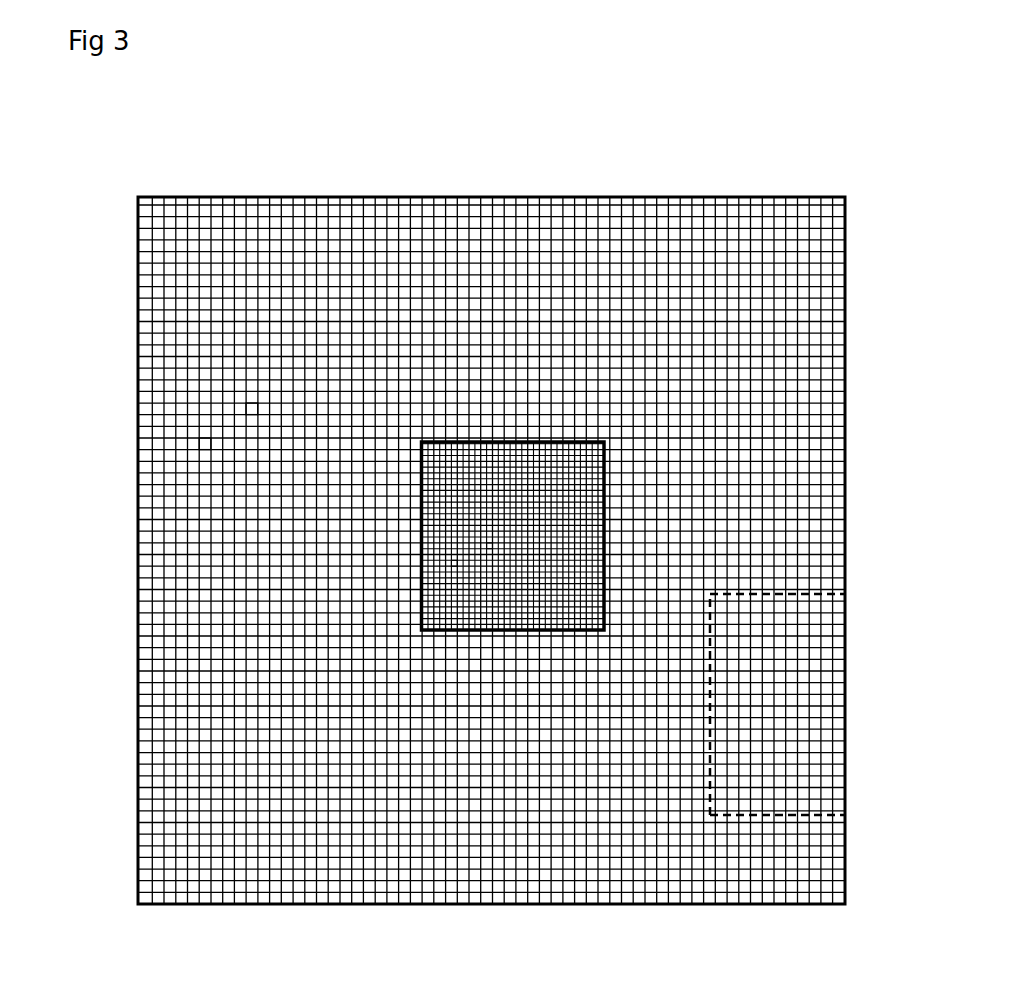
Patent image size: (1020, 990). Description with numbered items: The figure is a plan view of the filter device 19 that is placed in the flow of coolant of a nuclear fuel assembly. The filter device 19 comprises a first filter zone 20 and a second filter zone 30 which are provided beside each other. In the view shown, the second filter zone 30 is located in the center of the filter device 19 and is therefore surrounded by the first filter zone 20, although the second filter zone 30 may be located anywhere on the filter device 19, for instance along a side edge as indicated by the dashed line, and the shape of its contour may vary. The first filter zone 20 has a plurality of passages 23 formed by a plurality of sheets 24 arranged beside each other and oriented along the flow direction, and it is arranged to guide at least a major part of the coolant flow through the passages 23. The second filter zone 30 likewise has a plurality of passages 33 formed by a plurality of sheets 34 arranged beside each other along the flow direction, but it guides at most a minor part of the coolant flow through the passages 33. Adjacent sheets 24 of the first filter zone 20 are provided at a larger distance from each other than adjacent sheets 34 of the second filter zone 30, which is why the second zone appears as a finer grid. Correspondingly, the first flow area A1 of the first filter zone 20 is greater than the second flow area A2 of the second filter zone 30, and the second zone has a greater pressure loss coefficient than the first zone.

The filter device 19 is at (170, 172).
The first filter zone 20 is at (278, 302).
The passages 23 is at (345, 210).
The sheets 24 is at (712, 220).
The second filter zone 30 is at (492, 485).
The passages 33 is at (562, 453).
The sheets 34 is at (586, 448).
The first flow area A1 is at (260, 408).
The second flow area A2 is at (490, 545).